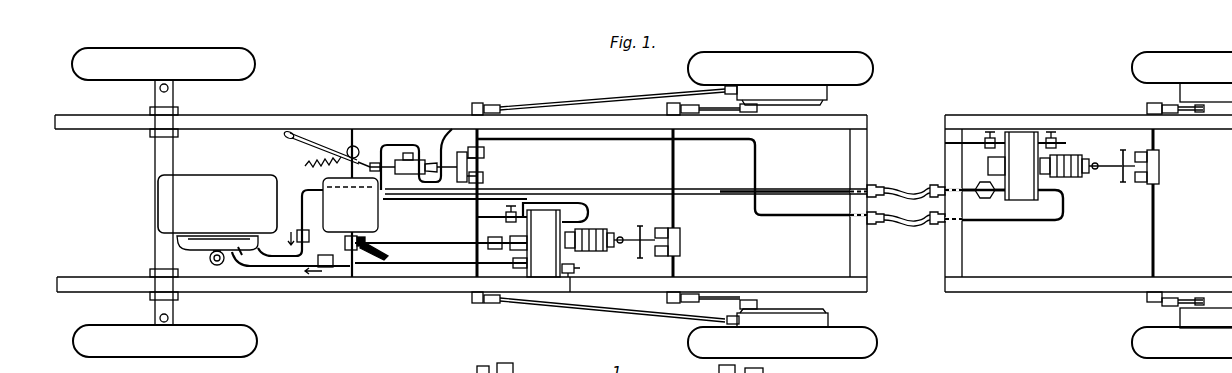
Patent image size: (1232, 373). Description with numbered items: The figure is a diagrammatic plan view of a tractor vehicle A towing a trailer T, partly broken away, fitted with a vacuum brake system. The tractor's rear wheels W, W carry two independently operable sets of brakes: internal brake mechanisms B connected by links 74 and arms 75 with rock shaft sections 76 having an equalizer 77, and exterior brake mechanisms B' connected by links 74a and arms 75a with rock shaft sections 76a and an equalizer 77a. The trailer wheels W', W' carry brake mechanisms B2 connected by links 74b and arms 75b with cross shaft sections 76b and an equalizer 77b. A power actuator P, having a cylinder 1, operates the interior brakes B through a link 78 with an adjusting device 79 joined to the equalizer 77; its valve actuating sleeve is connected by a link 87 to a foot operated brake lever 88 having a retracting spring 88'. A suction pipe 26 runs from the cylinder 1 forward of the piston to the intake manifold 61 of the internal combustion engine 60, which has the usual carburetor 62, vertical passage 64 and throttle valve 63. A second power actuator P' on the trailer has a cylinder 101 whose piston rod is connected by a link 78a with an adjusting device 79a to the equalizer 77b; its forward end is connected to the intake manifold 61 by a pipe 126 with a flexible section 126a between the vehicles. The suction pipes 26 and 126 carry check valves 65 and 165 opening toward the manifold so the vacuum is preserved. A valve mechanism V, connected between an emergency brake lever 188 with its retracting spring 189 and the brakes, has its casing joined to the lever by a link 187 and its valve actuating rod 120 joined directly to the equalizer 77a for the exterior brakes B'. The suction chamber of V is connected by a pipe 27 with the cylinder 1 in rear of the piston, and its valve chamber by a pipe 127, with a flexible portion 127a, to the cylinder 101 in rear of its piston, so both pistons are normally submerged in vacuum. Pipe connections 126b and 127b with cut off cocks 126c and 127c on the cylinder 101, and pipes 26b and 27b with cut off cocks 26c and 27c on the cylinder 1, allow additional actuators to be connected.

The cylinder 1 is at (543, 243).
The suction pipe 26 is at (420, 266).
The pipe 26b is at (523, 208).
The cut off cock 26c is at (508, 218).
The pipe 27 is at (415, 200).
The pipe 27b is at (580, 269).
The cut off cock 27c is at (571, 292).
The internal combustion engine 60 is at (217, 204).
The intake manifold 61 is at (180, 240).
The carburetor 62 is at (220, 266).
The throttle valve 63 is at (213, 266).
The vertical passage 64 is at (236, 262).
The check valve 65 is at (326, 256).
The links 74 is at (722, 90).
The links 74a is at (548, 104).
The links 74b is at (1180, 113).
The arms 75 is at (670, 103).
The arms 75a is at (478, 314).
The arms 75b is at (1147, 110).
The rock shaft sections 76 is at (678, 170).
The rock shaft sections 76a is at (475, 221).
The cross shaft sections 76b is at (1162, 178).
The equalizer 77 is at (682, 242).
The equalizer 77a is at (470, 168).
The equalizer 77b is at (1138, 186).
The link 78 is at (639, 229).
The link 78a is at (1123, 160).
The adjusting device 79 is at (643, 256).
The adjusting device 79a is at (1118, 170).
The link 87 is at (441, 242).
The foot operated brake lever 88 is at (351, 277).
The retracting spring 88' is at (374, 284).
The cylinder 101 is at (1018, 134).
The valve actuating rod 120 is at (447, 130).
The pipe 126 is at (716, 195).
The flexible section 126a is at (982, 188).
The pipe connection 126b is at (985, 142).
The cut off cock 126c is at (990, 132).
The pipe 127 is at (630, 142).
The flexible portion 127a is at (915, 224).
The pipe connection 127b is at (1066, 144).
The cut off cock 127c is at (1052, 132).
The check valve 165 is at (300, 227).
The link 187 is at (372, 170).
The emergency brake lever 188 is at (335, 147).
The retracting spring 189 is at (305, 166).
The tractor vehicle A is at (332, 103).
The internal brake mechanisms B is at (793, 206).
The exterior brake mechanisms B' is at (798, 206).
The brake mechanisms B2 is at (1180, 93).
The power actuator P is at (592, 203).
The second power actuator P' is at (1042, 200).
The trailer T is at (1095, 105).
The valve mechanism V is at (422, 170).
The rear wheels W is at (782, 204).
The trailer wheels W' is at (1182, 202).